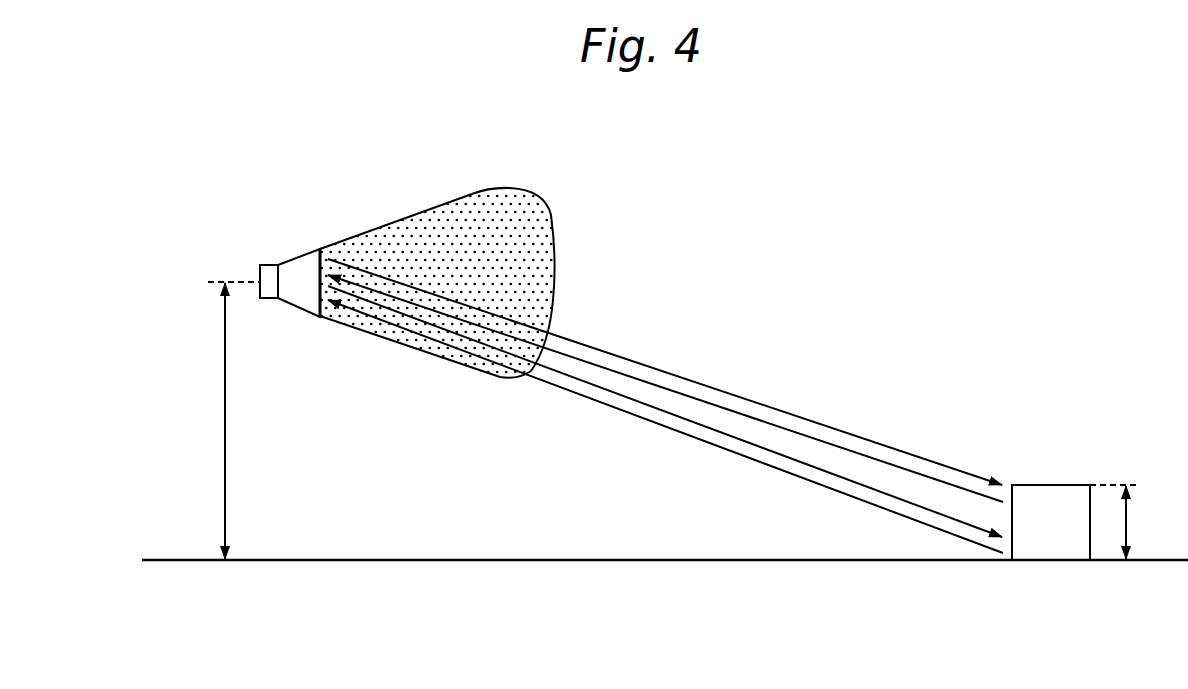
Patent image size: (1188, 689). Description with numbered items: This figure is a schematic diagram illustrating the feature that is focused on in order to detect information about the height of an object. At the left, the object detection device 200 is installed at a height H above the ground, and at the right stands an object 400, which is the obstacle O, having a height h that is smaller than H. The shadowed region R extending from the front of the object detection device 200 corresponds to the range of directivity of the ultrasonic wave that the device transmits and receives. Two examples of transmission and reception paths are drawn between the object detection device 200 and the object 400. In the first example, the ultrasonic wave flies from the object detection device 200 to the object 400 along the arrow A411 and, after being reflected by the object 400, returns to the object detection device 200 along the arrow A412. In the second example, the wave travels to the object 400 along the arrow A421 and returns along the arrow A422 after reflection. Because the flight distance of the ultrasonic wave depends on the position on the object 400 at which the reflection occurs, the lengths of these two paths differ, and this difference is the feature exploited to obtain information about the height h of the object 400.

The object detection device 200 is at (293, 250).
The shadowed region R is at (498, 187).
The arrow A411 is at (812, 420).
The arrow A412 is at (873, 455).
The arrow A421 is at (722, 437).
The arrow A422 is at (790, 477).
The object 400 is at (1050, 485).
The height H is at (228, 420).
The height h is at (1121, 522).